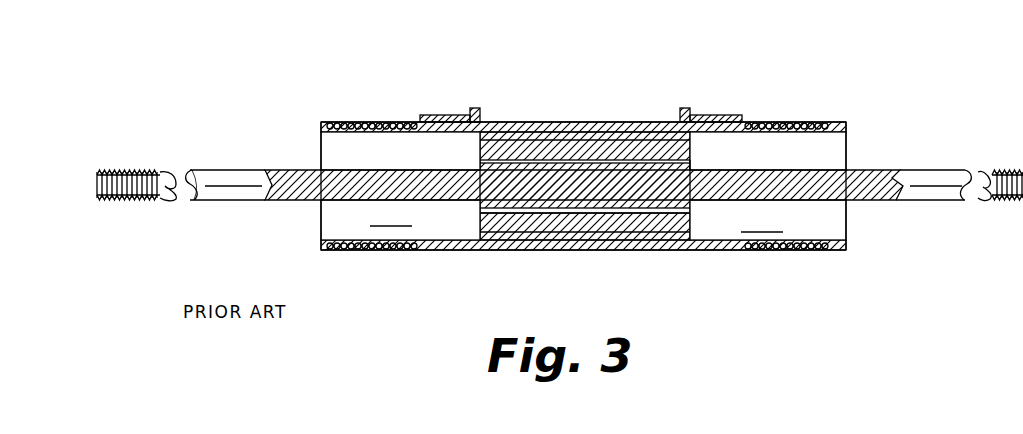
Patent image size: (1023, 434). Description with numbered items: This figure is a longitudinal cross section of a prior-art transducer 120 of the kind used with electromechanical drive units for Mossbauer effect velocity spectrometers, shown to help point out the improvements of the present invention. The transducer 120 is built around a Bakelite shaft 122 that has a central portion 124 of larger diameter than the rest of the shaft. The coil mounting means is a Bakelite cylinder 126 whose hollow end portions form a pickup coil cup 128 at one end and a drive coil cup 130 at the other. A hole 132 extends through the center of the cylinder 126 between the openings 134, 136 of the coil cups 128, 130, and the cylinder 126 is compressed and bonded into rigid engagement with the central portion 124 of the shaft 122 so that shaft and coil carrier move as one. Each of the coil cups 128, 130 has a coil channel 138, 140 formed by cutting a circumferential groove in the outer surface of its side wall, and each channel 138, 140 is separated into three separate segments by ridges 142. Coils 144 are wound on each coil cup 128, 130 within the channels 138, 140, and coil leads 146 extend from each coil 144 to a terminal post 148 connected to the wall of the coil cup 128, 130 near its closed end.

The transducer 120 is at (556, 121).
The Bakelite shaft 122 is at (900, 175).
The central portion 124 is at (692, 168).
The Bakelite cylinder 126 is at (638, 250).
The pickup coil cup 128 is at (844, 123).
The drive coil cup 130 is at (331, 122).
The hole 132 is at (504, 215).
The opening 134 is at (768, 186).
The opening 136 is at (400, 186).
The coil channel 138 is at (836, 124).
The coil channel 140 is at (418, 116).
The ridges 142 is at (770, 124).
The coils 144 is at (381, 250).
The coil leads 146 is at (722, 116).
The terminal post 148 is at (475, 108).